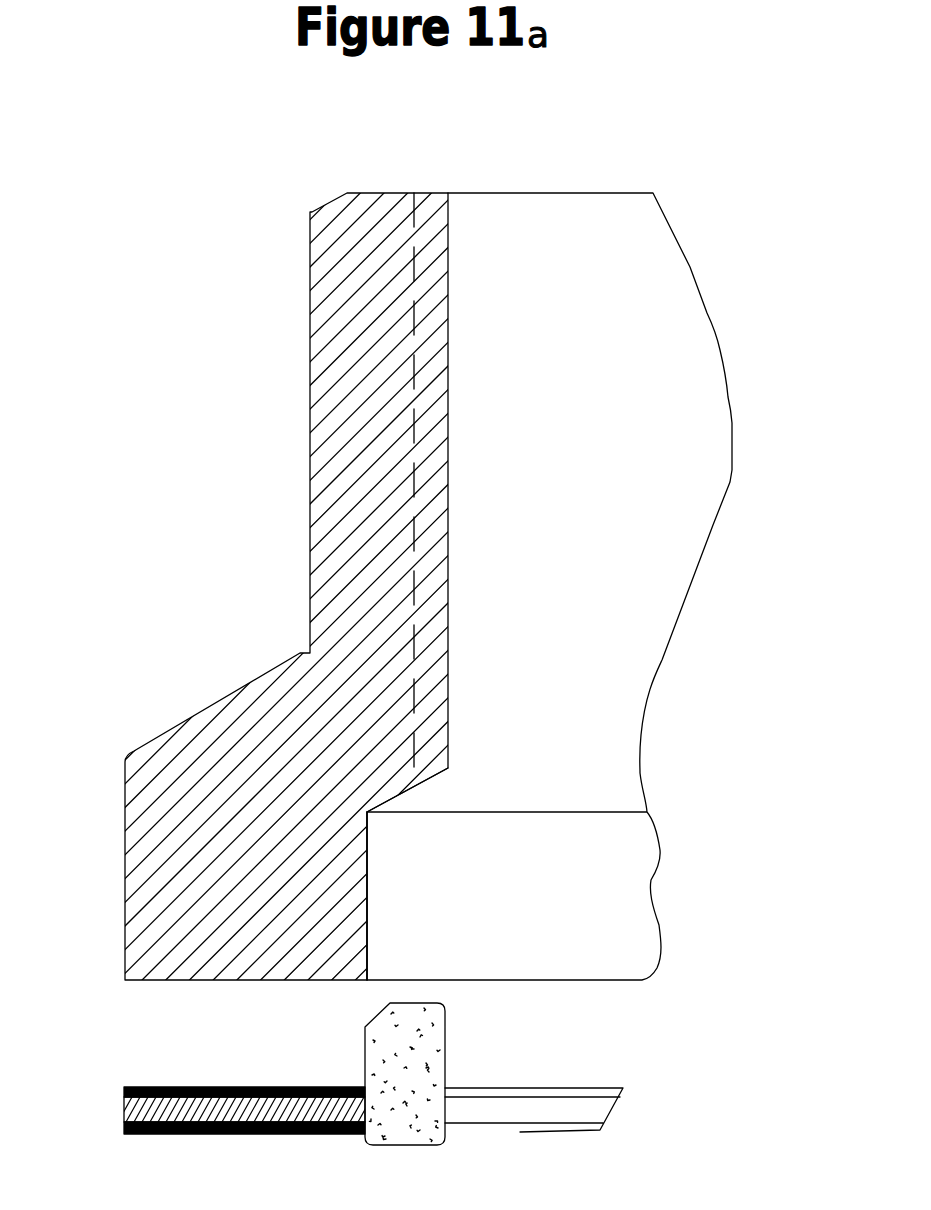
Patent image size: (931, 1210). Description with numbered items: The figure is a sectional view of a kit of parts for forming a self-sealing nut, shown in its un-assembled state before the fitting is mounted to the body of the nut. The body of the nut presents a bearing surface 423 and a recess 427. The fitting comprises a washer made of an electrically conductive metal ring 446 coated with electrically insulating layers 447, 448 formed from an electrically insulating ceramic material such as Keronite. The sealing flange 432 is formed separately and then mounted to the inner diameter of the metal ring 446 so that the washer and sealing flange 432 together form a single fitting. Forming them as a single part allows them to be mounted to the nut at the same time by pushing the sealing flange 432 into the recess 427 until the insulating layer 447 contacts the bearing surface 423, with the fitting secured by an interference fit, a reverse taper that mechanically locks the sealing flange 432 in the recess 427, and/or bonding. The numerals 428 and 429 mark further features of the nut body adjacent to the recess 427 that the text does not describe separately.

The bearing surface 423 is at (272, 981).
The recess 427 is at (432, 902).
The chamfered edge 428 is at (407, 790).
The side wall 429 is at (367, 940).
The sealing flange 432 is at (427, 1047).
The metal ring 446 is at (124, 1110).
The insulating layer 447 is at (165, 1087).
The insulating layer 448 is at (187, 1134).